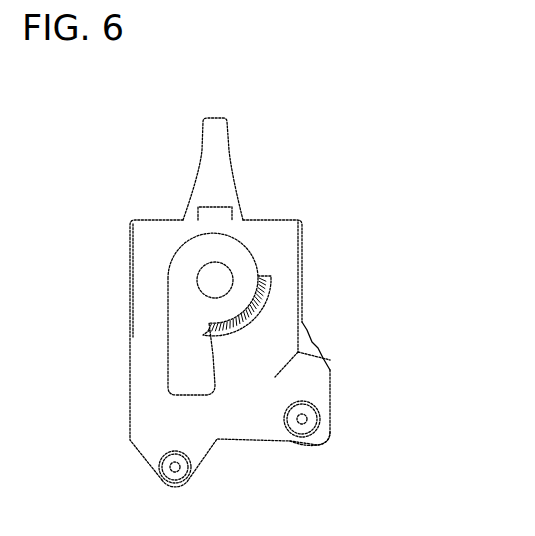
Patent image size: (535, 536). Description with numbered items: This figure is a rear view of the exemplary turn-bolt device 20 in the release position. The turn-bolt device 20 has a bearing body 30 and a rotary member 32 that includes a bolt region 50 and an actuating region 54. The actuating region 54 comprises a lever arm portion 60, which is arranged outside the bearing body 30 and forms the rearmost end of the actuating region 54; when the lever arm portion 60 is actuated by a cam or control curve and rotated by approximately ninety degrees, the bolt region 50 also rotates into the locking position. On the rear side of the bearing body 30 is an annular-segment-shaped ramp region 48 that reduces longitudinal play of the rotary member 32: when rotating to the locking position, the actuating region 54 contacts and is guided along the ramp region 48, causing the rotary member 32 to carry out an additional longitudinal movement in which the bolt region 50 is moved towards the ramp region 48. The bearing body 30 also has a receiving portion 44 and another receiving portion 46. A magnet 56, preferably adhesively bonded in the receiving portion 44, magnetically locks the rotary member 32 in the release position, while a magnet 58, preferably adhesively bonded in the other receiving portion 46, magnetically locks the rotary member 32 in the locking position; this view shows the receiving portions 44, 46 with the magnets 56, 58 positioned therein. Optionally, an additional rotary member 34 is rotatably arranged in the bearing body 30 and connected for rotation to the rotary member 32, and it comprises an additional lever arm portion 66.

The turn-bolt device 20 is at (240, 66).
The bearing body 30 is at (145, 247).
The rotary member 32 is at (250, 168).
The additional rotary member 34 is at (318, 447).
The receiving portion 44 is at (317, 408).
The receiving portion 46 is at (185, 478).
The ramp region 48 is at (253, 320).
The bolt region 50 is at (213, 158).
The actuating region 54 is at (150, 300).
The magnet 56 is at (300, 421).
The magnet 58 is at (171, 465).
The lever arm portion 60 is at (178, 355).
The additional lever arm portion 66 is at (324, 438).